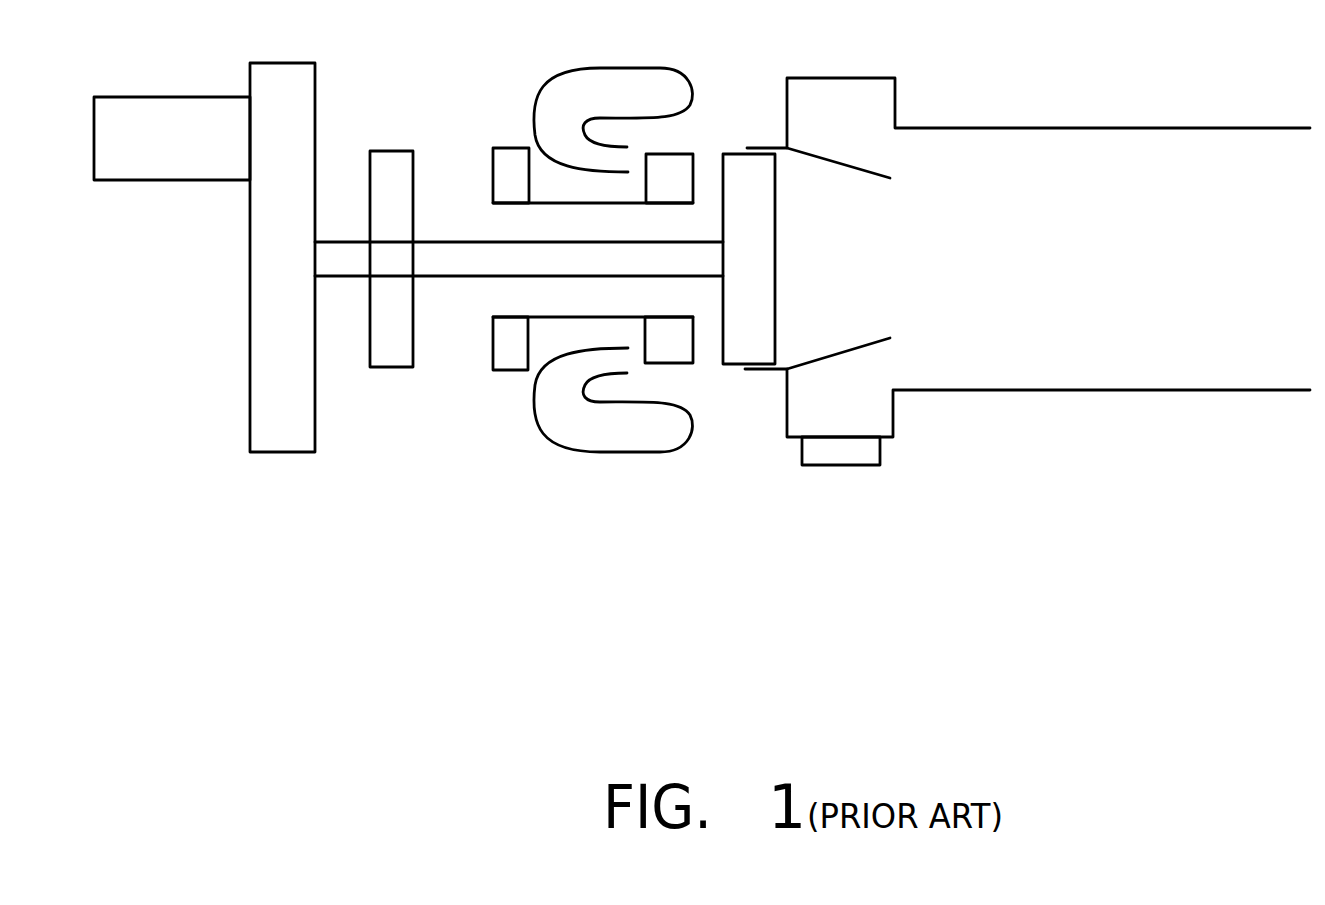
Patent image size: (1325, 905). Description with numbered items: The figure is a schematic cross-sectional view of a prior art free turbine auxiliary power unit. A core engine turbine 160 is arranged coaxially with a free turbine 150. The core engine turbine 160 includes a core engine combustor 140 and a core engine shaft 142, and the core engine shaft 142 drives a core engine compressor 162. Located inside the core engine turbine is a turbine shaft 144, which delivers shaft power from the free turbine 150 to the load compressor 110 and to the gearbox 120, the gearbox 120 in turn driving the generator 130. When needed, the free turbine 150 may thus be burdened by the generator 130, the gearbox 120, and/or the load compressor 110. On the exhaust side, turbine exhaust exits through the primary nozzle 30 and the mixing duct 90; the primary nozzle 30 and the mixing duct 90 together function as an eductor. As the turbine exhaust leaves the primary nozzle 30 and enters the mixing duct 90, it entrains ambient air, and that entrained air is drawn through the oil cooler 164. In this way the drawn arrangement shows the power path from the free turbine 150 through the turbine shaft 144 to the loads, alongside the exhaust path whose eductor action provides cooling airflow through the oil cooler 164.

The primary nozzle 30 is at (835, 160).
The mixing duct 90 is at (1113, 390).
The load compressor 110 is at (397, 367).
The gearbox 120 is at (278, 452).
The generator 130 is at (165, 182).
The core engine combustor 140 is at (553, 73).
The core engine shaft 142 is at (545, 318).
The turbine shaft 144 is at (443, 242).
The free turbine 150 is at (735, 365).
The core engine turbine 160 is at (678, 163).
The core engine compressor 162 is at (493, 158).
The oil cooler 164 is at (837, 467).